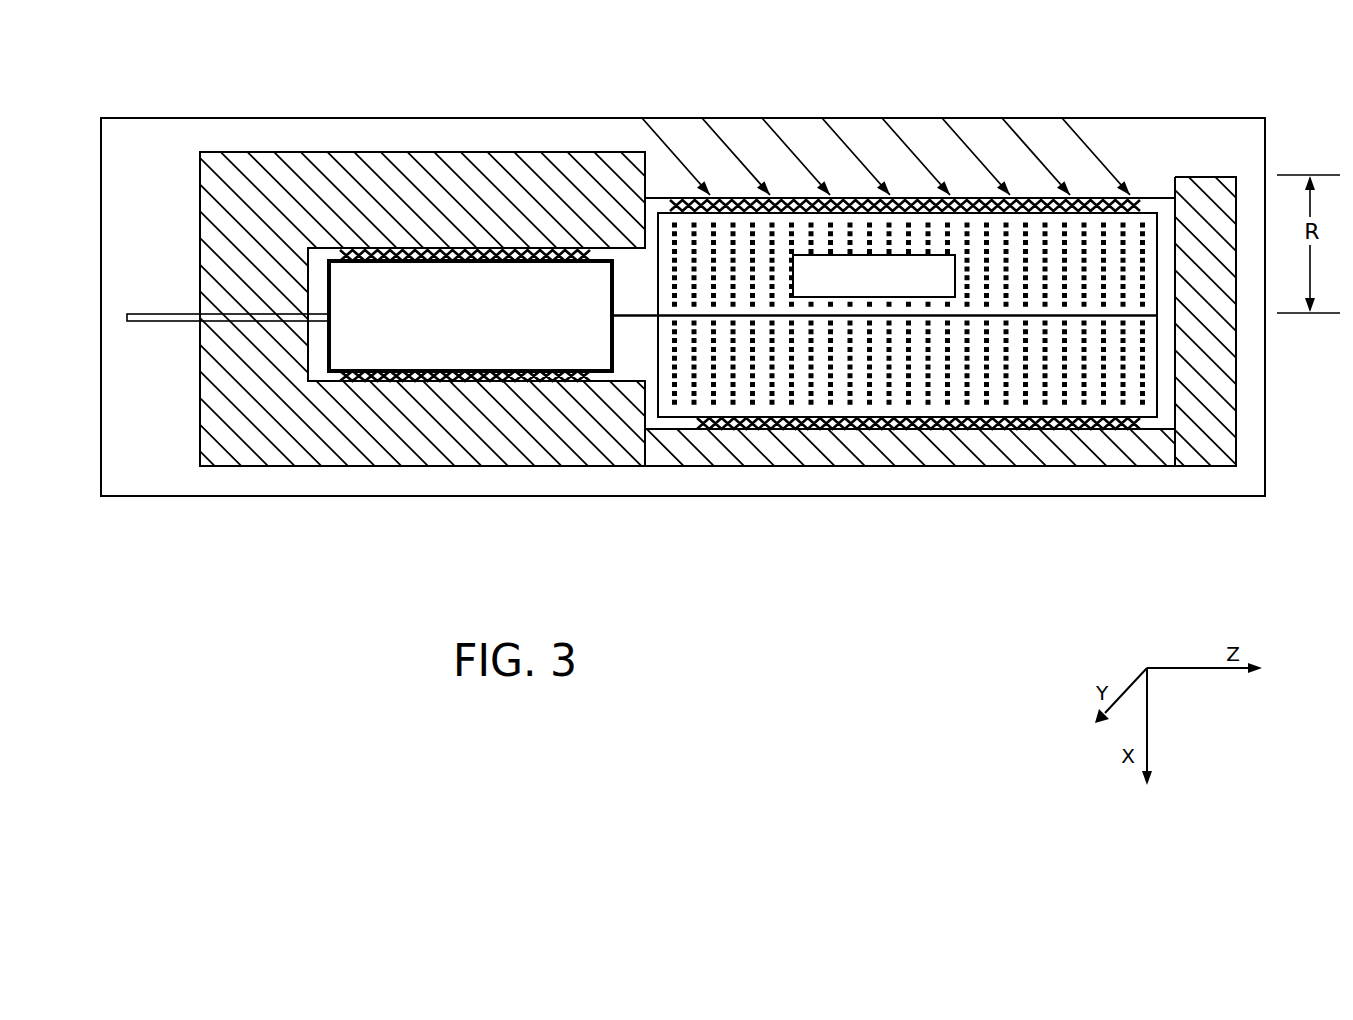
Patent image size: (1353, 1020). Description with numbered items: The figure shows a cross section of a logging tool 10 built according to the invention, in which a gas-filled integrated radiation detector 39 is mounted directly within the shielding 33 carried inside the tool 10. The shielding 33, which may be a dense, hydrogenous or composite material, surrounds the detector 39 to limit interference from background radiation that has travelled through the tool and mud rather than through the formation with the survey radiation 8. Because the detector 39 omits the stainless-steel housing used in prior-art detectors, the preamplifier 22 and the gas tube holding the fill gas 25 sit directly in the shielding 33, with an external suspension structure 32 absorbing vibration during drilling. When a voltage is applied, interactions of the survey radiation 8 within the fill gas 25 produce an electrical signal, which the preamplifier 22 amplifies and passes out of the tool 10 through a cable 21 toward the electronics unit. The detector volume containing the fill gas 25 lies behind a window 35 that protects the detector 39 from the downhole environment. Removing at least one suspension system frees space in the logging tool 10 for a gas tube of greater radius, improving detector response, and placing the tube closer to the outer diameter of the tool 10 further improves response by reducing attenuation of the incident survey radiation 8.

The survey radiation 8 is at (775, 132).
The logging tool 10 is at (465, 496).
The cable 21 is at (182, 323).
The preamplifier 22 is at (481, 349).
The fill gas 25 is at (940, 293).
The external suspension structure 32 is at (592, 380).
The shielding 33 is at (458, 153).
The window 35 is at (1157, 198).
The gas-filled integrated radiation detector 39 is at (373, 276).